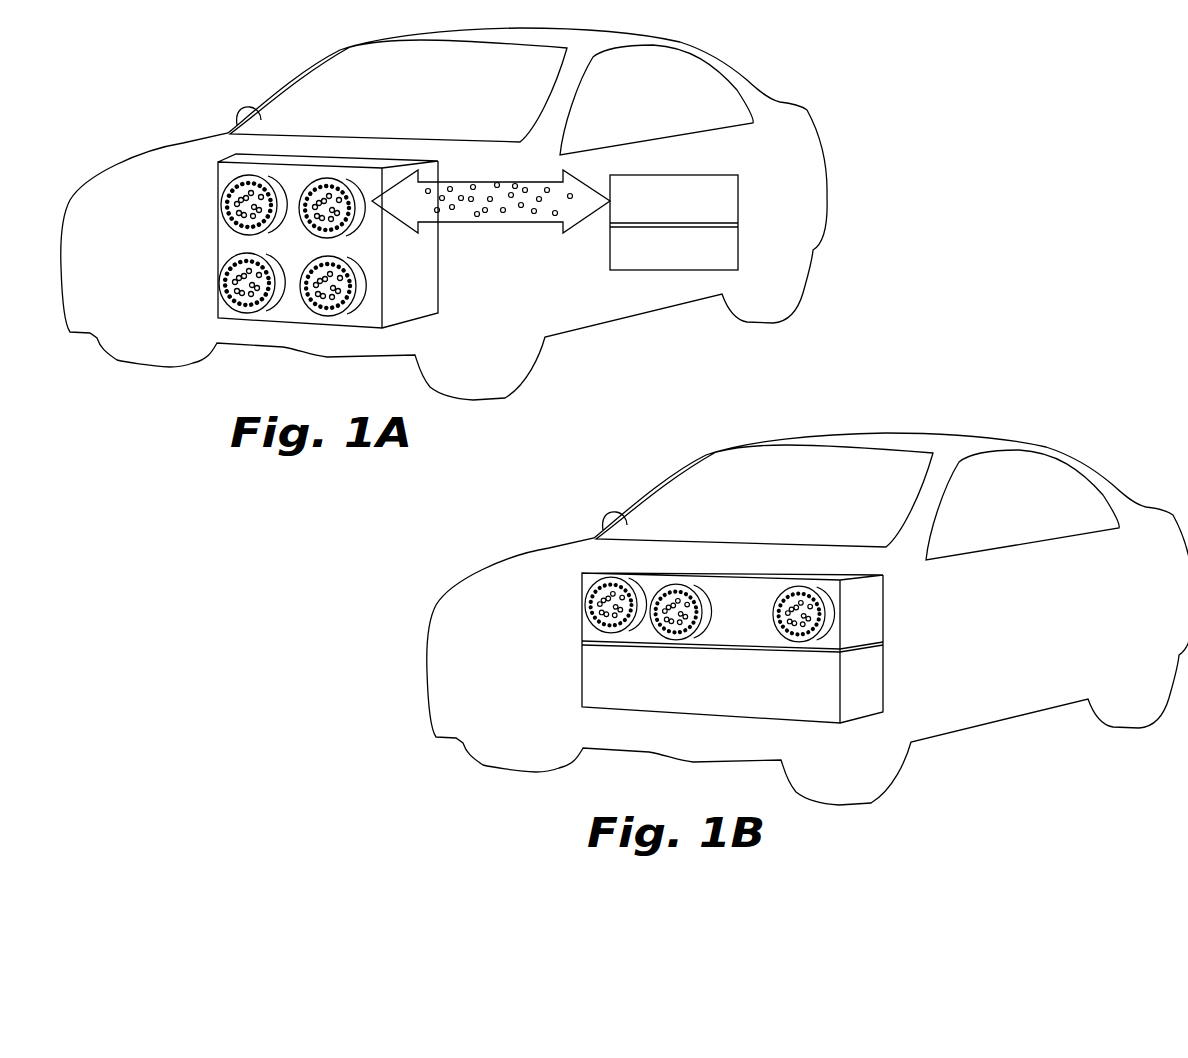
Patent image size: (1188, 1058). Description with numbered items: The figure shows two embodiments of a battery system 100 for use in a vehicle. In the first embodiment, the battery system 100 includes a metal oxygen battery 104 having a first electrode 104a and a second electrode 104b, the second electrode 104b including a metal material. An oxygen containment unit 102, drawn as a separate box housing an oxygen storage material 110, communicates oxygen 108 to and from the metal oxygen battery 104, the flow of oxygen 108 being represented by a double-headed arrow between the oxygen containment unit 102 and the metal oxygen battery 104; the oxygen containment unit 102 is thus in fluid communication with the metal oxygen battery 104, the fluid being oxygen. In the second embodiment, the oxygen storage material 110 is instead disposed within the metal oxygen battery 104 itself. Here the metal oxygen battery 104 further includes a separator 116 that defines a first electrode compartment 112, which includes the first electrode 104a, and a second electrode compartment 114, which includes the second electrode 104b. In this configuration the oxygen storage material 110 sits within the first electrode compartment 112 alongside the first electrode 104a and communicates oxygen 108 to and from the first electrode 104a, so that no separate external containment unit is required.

In FIG. 1A, the battery system 100 is at (527, 62).
In FIG. 1B, the battery system 100 is at (893, 467).
In FIG. 1A, the oxygen containment unit 102 is at (417, 290).
In FIG. 1A, the metal oxygen battery 104 is at (655, 267).
In FIG. 1B, the metal oxygen battery 104 is at (932, 677).
In FIG. 1A, the first electrode 104a is at (673, 200).
In FIG. 1B, the first electrode 104a is at (742, 612).
In FIG. 1A, the second electrode 104b is at (673, 250).
In FIG. 1B, the second electrode 104b is at (710, 682).
In FIG. 1A, the oxygen 108 is at (483, 200).
In FIG. 1A, the oxygen storage material 110 is at (334, 205).
In FIG. 1B, the oxygen storage material 110 is at (647, 640).
In FIG. 1B, the first electrode compartment 112 is at (883, 610).
In FIG. 1B, the second electrode compartment 114 is at (883, 680).
In FIG. 1A, the separator 116 is at (738, 227).
In FIG. 1B, the separator 116 is at (883, 648).